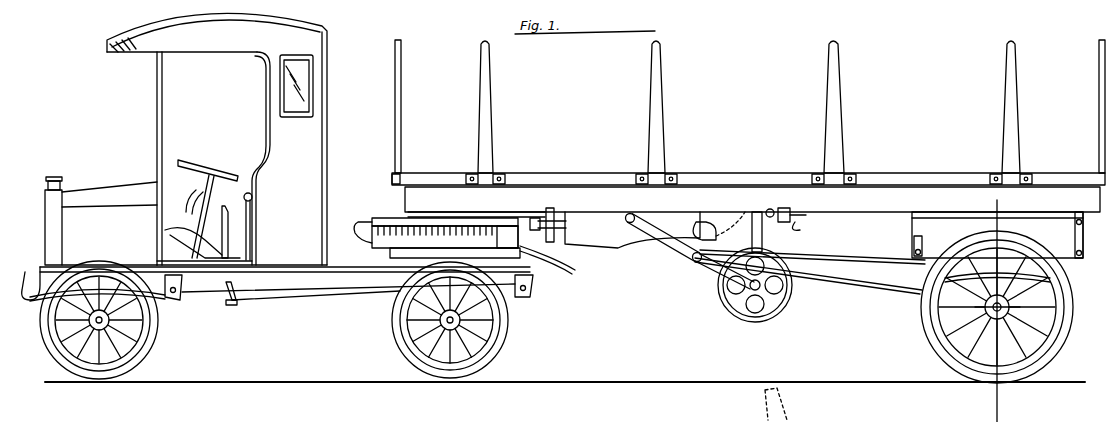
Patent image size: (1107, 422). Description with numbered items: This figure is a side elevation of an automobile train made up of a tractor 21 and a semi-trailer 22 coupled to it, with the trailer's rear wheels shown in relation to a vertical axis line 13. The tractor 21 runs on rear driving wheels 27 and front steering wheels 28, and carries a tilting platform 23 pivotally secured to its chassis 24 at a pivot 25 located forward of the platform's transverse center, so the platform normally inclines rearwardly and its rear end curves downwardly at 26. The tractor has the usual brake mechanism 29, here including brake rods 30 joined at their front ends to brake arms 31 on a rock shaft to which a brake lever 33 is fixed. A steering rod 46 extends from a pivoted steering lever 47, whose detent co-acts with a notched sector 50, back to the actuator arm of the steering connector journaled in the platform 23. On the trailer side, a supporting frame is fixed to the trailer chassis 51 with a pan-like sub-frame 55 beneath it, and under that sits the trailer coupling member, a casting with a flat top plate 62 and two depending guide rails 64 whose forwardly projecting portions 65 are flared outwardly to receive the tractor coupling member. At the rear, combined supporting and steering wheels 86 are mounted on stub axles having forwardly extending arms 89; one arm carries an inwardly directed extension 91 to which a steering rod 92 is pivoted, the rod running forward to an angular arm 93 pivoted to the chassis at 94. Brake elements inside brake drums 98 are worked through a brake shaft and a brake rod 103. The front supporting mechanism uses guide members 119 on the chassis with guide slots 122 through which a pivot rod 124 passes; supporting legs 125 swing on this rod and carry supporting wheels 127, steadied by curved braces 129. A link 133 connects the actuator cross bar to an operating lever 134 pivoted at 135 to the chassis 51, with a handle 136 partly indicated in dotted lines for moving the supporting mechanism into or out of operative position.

The trailer 13 is at (748, 231).
The tractor 21 is at (217, 139).
The trailer 22 is at (748, 169).
The tilting platform 23 is at (536, 285).
The chassis 24 is at (340, 267).
The pivot 25 is at (450, 256).
The curved rear end 26 is at (576, 268).
The rear traction or driving wheels 27 is at (509, 337).
The front traction or steering wheels 28 is at (158, 341).
The brake mechanism 29 is at (352, 296).
The brake rods 30 is at (291, 300).
The brake arms 31 is at (232, 295).
The brake lever 33 is at (200, 206).
The steering rod 46 is at (262, 302).
The steering lever 47 is at (228, 238).
The notched sector 50 is at (232, 255).
The chassis 51 is at (752, 199).
The sub-frame 55 is at (490, 206).
The top plate 62 is at (396, 211).
The guide rails 64 is at (445, 237).
The forwardly-projecting portions 65 is at (362, 224).
The combined supporting and steering wheels 86 is at (1068, 340).
The forwardly extending arms 89 is at (966, 318).
The inwardly-directed extension 91 is at (955, 293).
The steering rod 92 is at (858, 284).
The angular arm 93 is at (507, 237).
The pivot 94 is at (562, 205).
The brake drums 98 is at (1020, 300).
The brake rod 103 is at (852, 252).
The guide members 119 is at (640, 243).
The guide slots 122 is at (687, 236).
The pivot rod 124 is at (624, 218).
The supporting legs 125 is at (693, 259).
The supporting wheels 127 is at (726, 300).
The curved braces 129 is at (718, 268).
The link 133 is at (772, 202).
The operating lever 134 is at (814, 205).
The pivot 135 is at (810, 227).
The handle 136 is at (764, 402).